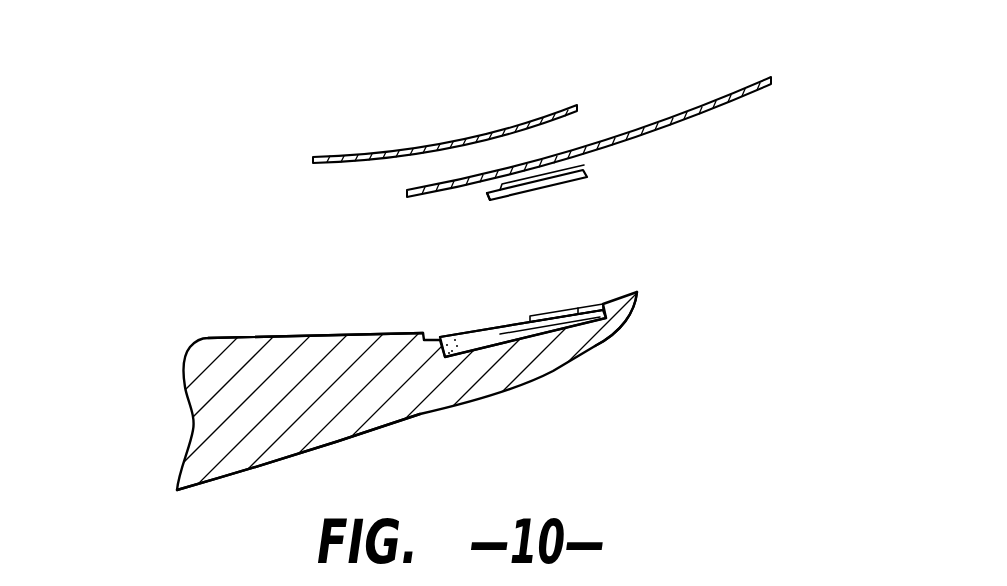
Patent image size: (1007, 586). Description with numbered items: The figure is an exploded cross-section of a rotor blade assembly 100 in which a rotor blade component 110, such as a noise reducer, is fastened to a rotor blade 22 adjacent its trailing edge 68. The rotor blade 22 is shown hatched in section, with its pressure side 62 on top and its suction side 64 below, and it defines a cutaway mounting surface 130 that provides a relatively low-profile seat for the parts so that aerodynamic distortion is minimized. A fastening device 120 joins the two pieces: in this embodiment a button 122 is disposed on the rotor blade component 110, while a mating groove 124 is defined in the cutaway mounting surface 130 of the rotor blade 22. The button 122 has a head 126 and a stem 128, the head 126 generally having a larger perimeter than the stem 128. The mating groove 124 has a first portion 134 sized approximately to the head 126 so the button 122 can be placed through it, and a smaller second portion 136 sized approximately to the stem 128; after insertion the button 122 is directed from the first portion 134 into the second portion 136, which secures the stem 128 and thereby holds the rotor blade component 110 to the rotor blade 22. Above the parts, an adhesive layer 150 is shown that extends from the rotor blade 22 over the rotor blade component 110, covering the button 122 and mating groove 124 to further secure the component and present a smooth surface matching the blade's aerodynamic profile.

The rotor blade assembly 100 is at (172, 132).
The rotor blade component 110 is at (718, 72).
The adhesive layer 150 is at (348, 155).
The button 122 is at (576, 192).
The head 126 is at (502, 198).
The stem 128 is at (503, 182).
The fastening device 120 is at (620, 240).
The rotor blade 22 is at (148, 406).
The pressure side 62 is at (223, 338).
The suction side 64 is at (293, 462).
The trailing edge 68 is at (633, 315).
The mating groove 124 is at (507, 356).
The cutaway mounting surface 130 is at (431, 336).
The first portion 134 is at (477, 333).
The second portion 136 is at (562, 315).